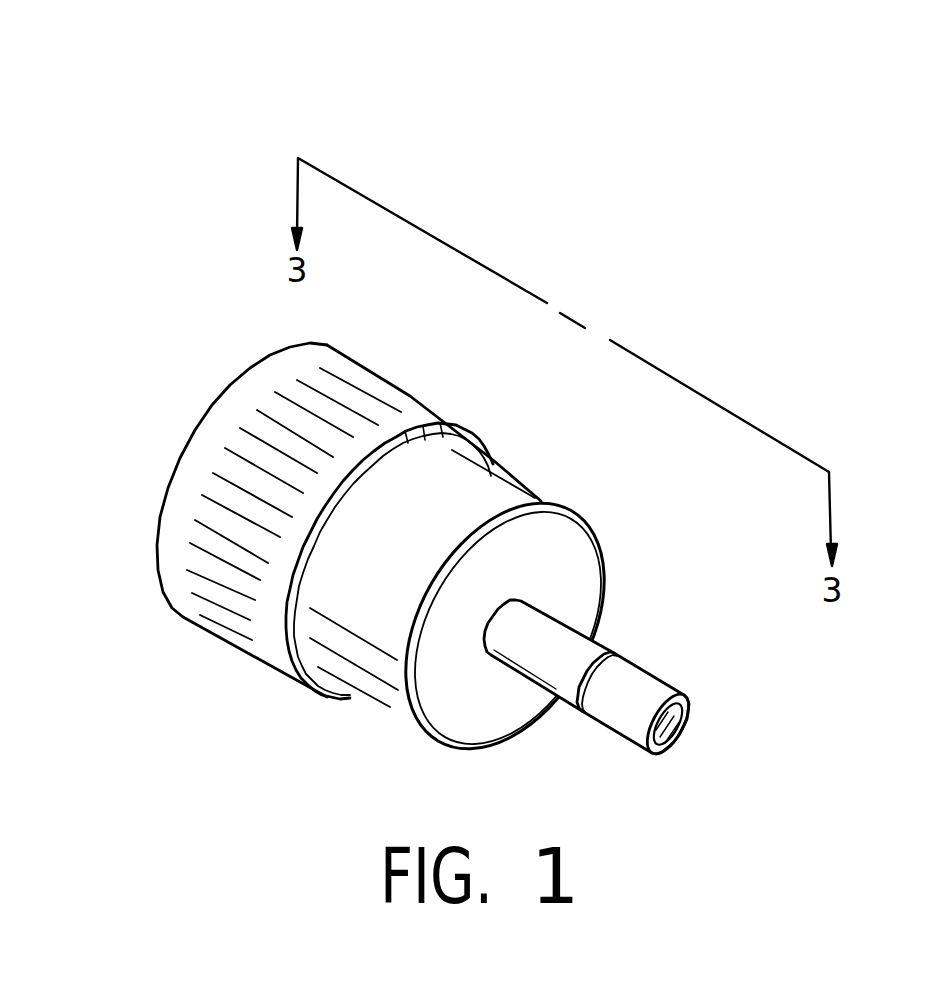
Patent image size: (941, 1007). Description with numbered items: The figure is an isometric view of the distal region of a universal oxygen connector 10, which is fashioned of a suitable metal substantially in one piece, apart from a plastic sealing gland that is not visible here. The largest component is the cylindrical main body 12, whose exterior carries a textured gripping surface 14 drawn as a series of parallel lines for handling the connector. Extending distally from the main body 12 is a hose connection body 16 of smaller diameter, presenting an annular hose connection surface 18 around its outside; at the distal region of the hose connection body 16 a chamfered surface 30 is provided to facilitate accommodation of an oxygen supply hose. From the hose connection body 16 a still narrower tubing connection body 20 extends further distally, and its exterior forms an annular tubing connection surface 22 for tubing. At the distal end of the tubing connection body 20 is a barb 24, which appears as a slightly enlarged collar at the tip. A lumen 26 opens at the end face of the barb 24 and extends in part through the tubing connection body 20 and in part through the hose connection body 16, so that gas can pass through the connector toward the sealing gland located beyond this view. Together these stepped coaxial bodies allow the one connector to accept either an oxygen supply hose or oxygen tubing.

The universal oxygen connector 10 is at (715, 205).
The cylindrical main body 12 is at (367, 365).
The textured gripping surface 14 is at (240, 600).
The hose connection body 16 is at (528, 487).
The annular hose connection surface 18 is at (483, 498).
The tubing connection body 20 is at (607, 647).
The annular tubing connection surface 22 is at (563, 638).
The barb 24 is at (648, 683).
The lumen 26 is at (670, 725).
The chamfered surface 30 is at (433, 593).